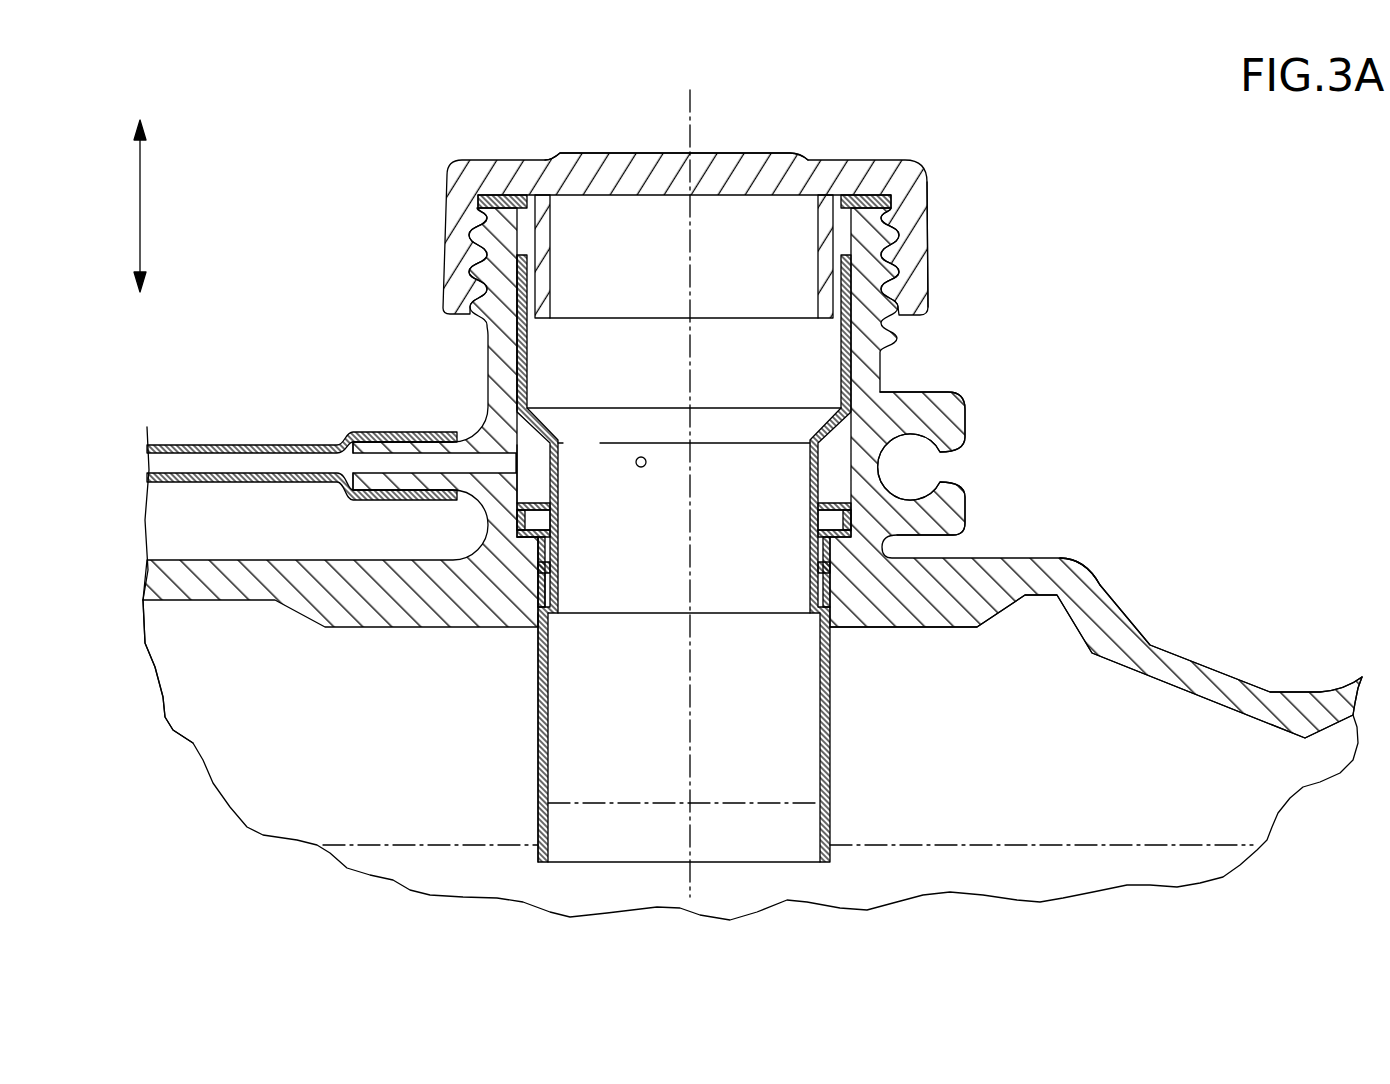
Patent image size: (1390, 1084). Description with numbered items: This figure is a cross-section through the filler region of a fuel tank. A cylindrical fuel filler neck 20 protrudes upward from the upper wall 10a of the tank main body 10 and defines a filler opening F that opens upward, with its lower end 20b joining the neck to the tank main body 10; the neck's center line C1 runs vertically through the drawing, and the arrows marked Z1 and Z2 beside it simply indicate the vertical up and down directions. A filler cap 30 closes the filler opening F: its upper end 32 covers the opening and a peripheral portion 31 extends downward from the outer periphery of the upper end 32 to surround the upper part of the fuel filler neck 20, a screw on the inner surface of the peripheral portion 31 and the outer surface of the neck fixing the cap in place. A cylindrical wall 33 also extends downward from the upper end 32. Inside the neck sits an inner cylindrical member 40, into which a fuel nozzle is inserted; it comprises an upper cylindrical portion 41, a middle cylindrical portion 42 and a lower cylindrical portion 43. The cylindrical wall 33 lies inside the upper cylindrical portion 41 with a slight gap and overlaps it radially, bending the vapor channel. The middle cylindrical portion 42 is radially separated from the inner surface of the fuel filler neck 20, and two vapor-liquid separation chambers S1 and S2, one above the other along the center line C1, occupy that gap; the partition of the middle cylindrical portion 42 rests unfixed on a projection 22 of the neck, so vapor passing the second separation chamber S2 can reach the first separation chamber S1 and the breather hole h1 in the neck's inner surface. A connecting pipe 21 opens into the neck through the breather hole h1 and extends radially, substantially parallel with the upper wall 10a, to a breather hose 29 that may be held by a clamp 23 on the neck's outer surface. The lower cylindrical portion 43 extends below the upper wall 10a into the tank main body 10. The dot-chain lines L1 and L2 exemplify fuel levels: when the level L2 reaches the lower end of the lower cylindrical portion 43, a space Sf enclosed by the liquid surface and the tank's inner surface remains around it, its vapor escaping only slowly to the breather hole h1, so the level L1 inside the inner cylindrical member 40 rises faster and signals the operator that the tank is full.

The tank main body 10 is at (1225, 638).
The upper wall 10a is at (1035, 574).
The fuel filler neck 20 is at (503, 355).
The lower end 20b is at (538, 622).
The connecting pipe 21 is at (421, 447).
The projection 22 is at (523, 551).
The clamp 23 is at (936, 410).
The breather hose 29 is at (228, 450).
The filler cap 30 is at (906, 144).
The peripheral portion 31 is at (907, 270).
The upper end 32 is at (789, 156).
The cylindrical wall 33 is at (541, 240).
The inner cylindrical member 40 is at (849, 809).
The upper cylindrical portion 41 is at (524, 360).
The middle cylindrical portion 42 is at (553, 530).
The lower cylindrical portion 43 is at (549, 753).
The filler opening F is at (725, 284).
The first separation chamber S1 is at (540, 476).
The second separation chamber S2 is at (548, 587).
The breather hole h1 is at (522, 463).
The liquid level L1 is at (727, 801).
The liquid level L2 is at (987, 845).
The space Sf is at (352, 752).
The center line C1 is at (690, 474).
The upward direction Z1 is at (139, 187).
The downward direction Z2 is at (139, 296).